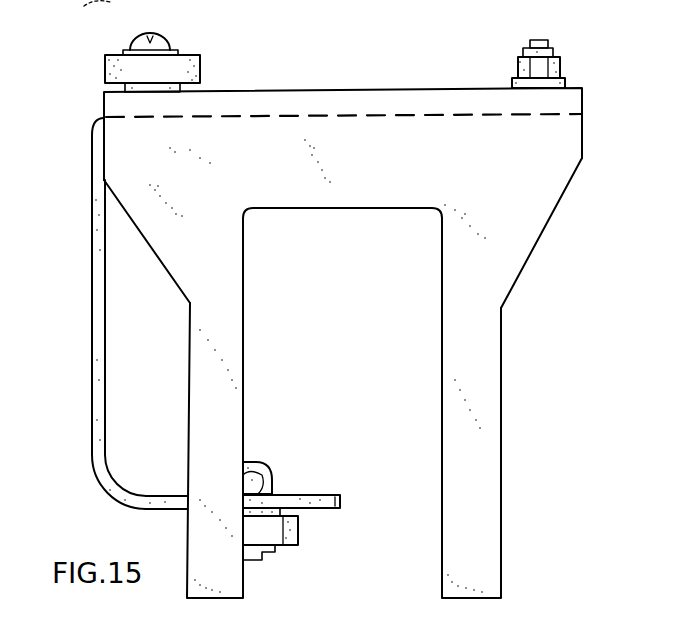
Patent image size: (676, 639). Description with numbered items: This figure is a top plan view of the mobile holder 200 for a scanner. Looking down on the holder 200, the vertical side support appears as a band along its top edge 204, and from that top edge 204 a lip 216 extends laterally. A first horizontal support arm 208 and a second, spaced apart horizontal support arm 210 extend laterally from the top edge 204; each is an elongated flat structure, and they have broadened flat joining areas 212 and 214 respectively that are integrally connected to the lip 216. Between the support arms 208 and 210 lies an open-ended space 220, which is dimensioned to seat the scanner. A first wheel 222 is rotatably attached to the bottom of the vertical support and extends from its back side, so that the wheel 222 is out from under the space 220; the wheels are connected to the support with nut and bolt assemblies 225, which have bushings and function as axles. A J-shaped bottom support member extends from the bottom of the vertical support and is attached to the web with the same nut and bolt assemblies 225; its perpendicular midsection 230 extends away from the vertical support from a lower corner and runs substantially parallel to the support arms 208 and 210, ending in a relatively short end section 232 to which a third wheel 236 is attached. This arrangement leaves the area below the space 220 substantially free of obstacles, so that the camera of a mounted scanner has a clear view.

The holder 200 is at (374, 323).
The top edge 204 is at (460, 56).
The first horizontal support arm 208 is at (228, 401).
The second horizontal support arm 210 is at (478, 494).
The broadened flat joining area 212 is at (213, 130).
The broadened flat joining area 214 is at (538, 146).
The lip 216 is at (340, 142).
The open-ended space 220 is at (348, 271).
The first wheel 222 is at (200, 58).
The nut and bolt assemblies 225 is at (152, 44).
The perpendicular midsection 230 is at (96, 335).
The end section 232 is at (340, 500).
The third wheel 236 is at (298, 533).